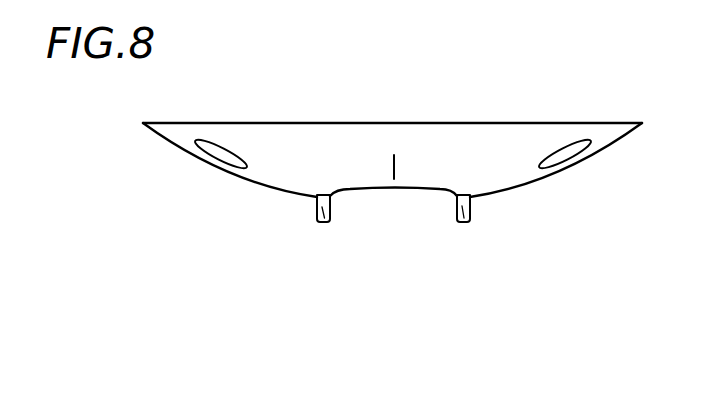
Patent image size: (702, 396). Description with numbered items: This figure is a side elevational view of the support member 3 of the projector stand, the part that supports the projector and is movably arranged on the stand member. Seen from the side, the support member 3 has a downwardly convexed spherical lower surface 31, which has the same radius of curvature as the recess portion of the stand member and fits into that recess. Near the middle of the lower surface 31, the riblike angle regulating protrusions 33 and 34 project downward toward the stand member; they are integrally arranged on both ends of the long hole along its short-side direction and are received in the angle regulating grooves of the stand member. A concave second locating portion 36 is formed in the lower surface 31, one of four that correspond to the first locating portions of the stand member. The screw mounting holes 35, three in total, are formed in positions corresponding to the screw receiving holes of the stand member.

The support member 3 is at (505, 165).
The spherical lower surface 31 is at (432, 175).
The angle regulating protrusion 33 is at (459, 222).
The angle regulating protrusion 34 is at (319, 222).
The screw mounting hole 35 is at (230, 158).
The second locating portion 36 is at (391, 172).